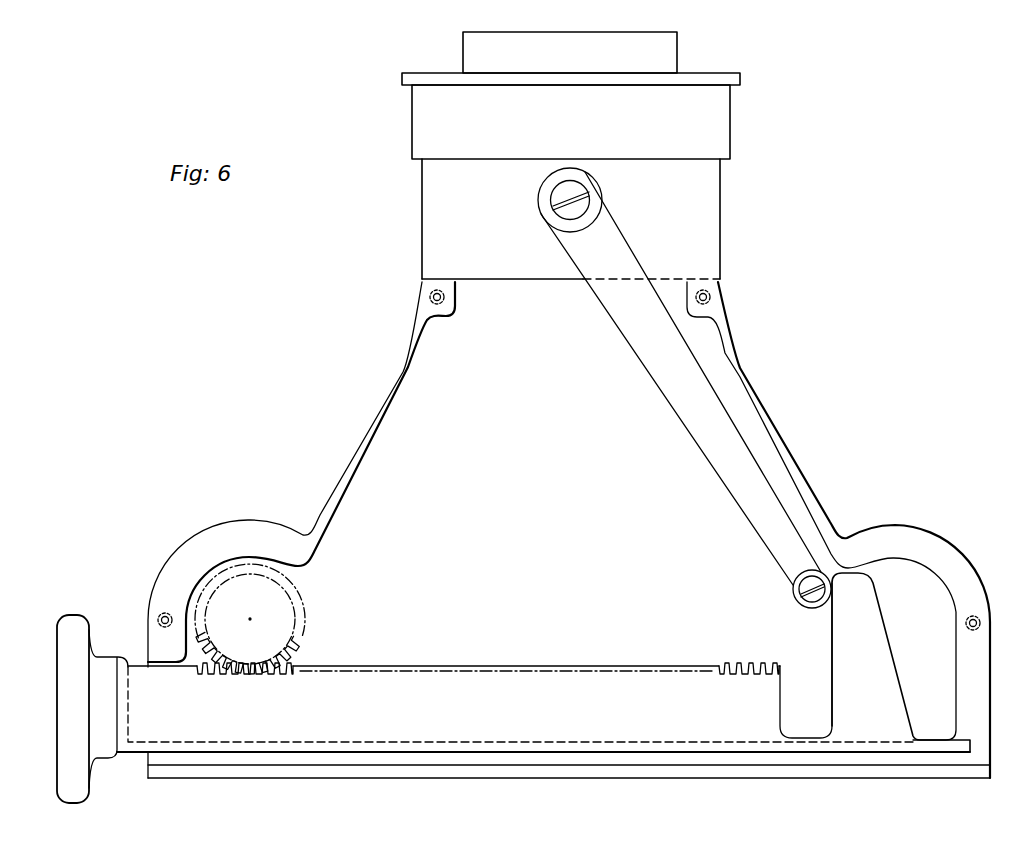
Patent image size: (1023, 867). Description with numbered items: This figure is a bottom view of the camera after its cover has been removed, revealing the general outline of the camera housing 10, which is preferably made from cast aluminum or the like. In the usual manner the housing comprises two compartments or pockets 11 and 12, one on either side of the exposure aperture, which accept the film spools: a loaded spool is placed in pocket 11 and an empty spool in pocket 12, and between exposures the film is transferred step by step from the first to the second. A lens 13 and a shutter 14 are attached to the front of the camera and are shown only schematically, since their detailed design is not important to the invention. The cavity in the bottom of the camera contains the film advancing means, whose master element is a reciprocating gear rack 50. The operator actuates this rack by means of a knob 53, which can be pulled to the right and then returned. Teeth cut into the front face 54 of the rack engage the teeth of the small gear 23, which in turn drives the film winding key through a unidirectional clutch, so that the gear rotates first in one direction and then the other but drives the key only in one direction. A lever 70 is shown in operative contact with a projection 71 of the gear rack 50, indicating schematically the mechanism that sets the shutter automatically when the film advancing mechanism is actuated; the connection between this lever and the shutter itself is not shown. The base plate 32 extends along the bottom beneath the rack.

The camera housing 10 is at (384, 411).
The pocket 11 is at (927, 543).
The pocket 12 is at (217, 534).
The lens 13 is at (678, 53).
The shutter 14 is at (732, 121).
The gear 23 is at (292, 606).
The base plate 32 is at (420, 770).
The gear rack 50 is at (310, 745).
The knob 53 is at (76, 627).
The front face 54 is at (322, 670).
The lever 70 is at (692, 427).
The projection 71 is at (840, 628).